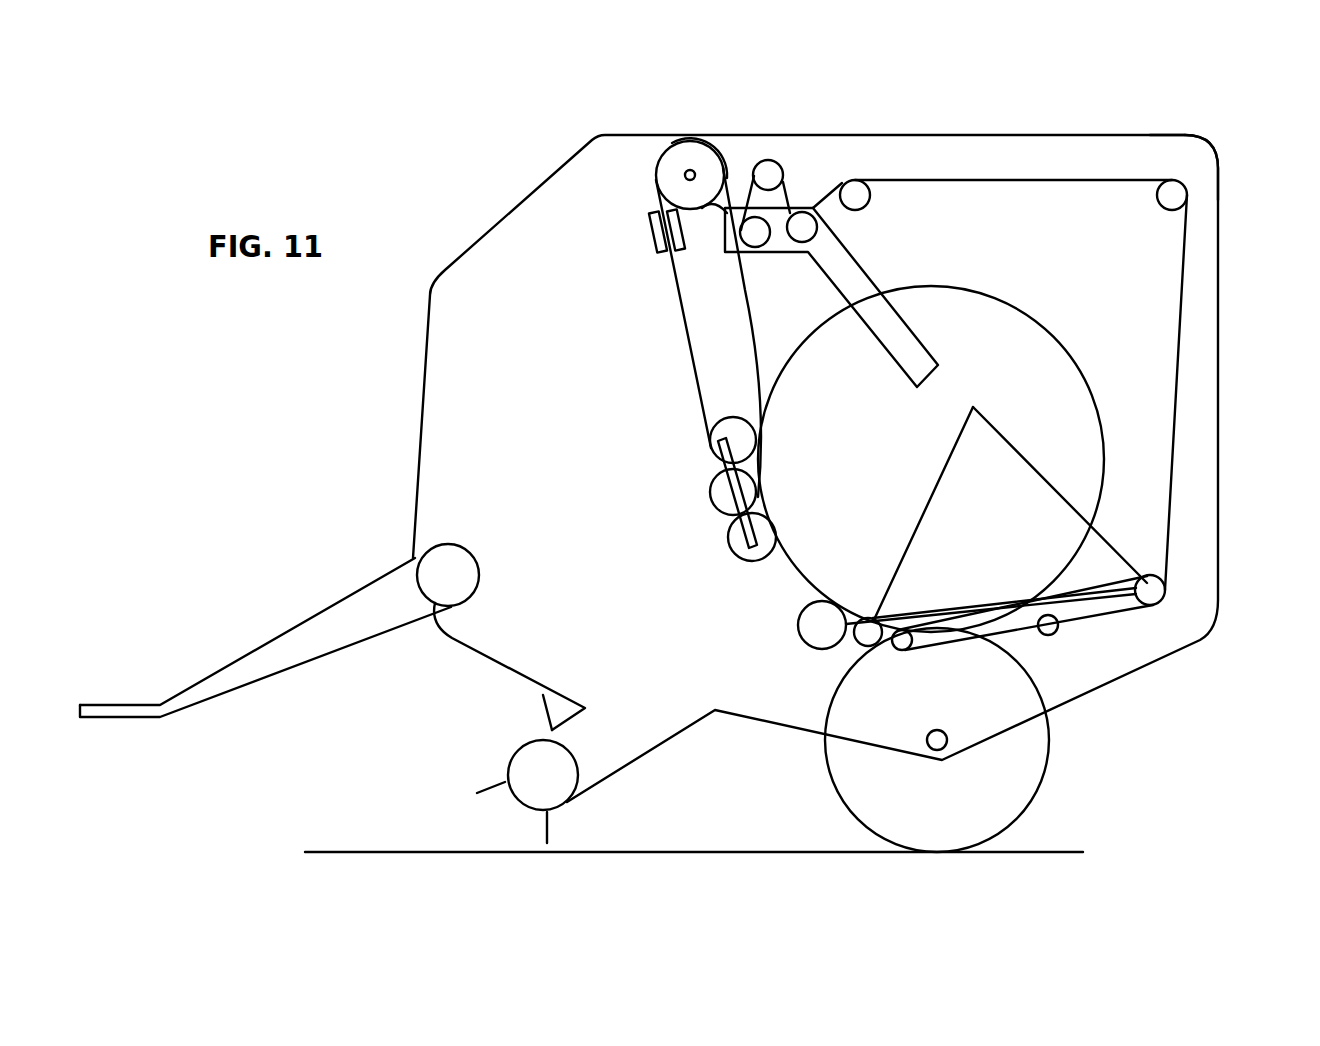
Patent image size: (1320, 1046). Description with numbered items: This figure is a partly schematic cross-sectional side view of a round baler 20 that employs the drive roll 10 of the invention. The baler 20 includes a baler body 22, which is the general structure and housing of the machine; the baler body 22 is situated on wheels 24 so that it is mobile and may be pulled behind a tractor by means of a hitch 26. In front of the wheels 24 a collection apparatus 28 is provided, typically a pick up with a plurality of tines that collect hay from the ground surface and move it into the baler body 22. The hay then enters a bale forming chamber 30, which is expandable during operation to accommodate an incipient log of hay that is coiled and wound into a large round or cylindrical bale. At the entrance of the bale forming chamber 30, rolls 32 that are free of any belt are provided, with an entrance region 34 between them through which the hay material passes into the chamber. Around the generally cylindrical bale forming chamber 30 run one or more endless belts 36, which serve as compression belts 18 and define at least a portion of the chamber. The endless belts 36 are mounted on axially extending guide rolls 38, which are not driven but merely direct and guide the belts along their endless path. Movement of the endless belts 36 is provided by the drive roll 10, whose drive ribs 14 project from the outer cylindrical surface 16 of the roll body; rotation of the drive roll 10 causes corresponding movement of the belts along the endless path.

The drive roll 10 is at (682, 157).
The drive ribs 14 is at (727, 188).
The outer cylindrical surface 16 is at (702, 208).
The compression belts 18 is at (1013, 178).
The round baler 20 is at (435, 180).
The baler body 22 is at (1187, 132).
The wheels 24 is at (997, 790).
The hitch 26 is at (323, 628).
The collection apparatus 28 is at (628, 740).
The bale forming chamber 30 is at (1073, 367).
The rolls 32 is at (730, 520).
The entrance region 34 is at (776, 583).
The endless belts 36 is at (1180, 338).
The guide rolls 38 is at (852, 192).